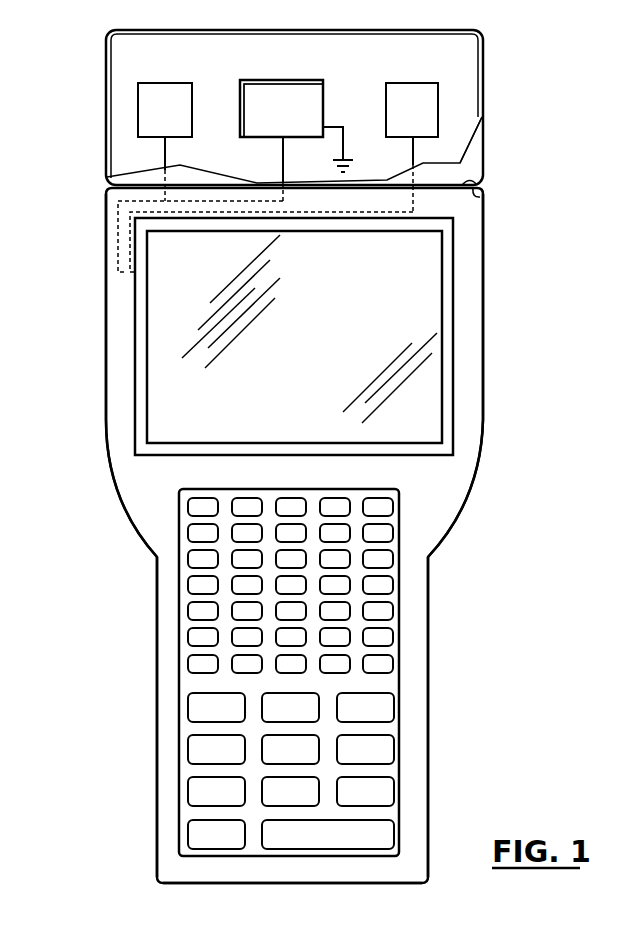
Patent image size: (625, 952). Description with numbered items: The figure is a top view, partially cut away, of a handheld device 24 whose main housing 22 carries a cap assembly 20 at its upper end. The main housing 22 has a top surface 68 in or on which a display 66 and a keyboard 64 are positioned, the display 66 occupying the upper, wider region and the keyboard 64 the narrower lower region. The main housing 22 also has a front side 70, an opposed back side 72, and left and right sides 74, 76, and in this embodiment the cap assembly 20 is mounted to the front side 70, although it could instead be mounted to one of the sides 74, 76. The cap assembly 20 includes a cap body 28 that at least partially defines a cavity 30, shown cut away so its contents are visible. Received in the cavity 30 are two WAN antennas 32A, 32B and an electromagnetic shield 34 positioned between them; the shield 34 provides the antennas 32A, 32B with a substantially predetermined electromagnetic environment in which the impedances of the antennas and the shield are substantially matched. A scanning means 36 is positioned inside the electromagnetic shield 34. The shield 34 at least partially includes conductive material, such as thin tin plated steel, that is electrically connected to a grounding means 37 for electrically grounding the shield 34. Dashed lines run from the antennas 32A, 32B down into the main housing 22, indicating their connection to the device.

The cap assembly 20 is at (497, 92).
The main housing 22 is at (474, 405).
The handheld device 24 is at (508, 348).
The cap body 28 is at (106, 63).
The cavity 30 is at (465, 50).
The WAN antenna 32A is at (182, 58).
The WAN antenna 32B is at (437, 60).
The electromagnetic shield 34 is at (325, 93).
The scanning means 36 is at (268, 127).
The grounding means 37 is at (347, 148).
The keyboard 64 is at (383, 703).
The display 66 is at (157, 428).
The top surface 68 is at (440, 512).
The front side 70 is at (484, 196).
The back side 72 is at (257, 884).
The left side 74 is at (157, 679).
The right side 76 is at (428, 597).